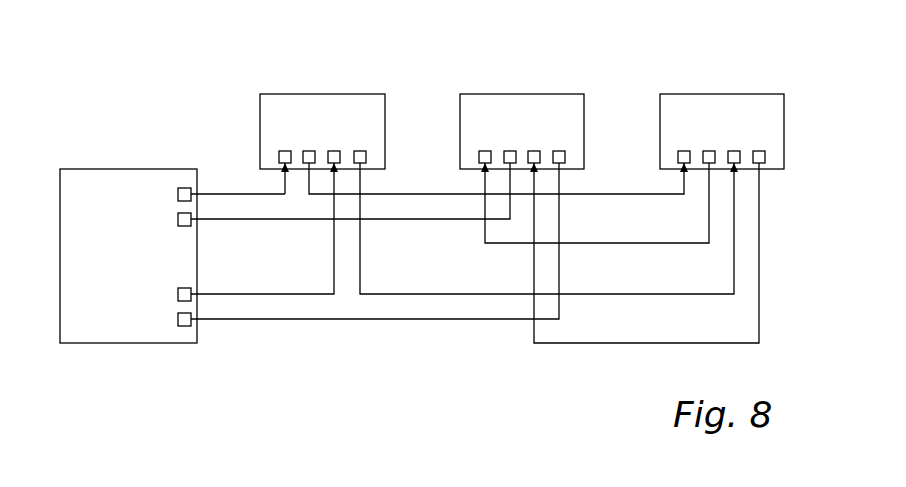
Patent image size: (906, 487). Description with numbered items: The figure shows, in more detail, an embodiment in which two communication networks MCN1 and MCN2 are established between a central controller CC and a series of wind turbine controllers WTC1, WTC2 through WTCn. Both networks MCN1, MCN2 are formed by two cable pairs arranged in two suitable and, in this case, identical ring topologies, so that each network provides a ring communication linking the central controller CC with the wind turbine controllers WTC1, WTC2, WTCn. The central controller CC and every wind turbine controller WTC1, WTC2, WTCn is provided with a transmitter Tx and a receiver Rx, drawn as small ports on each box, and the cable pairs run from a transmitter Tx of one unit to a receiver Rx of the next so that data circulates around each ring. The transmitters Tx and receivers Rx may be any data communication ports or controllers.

The central controller CC is at (70, 344).
The first communication network MCN1 is at (152, 192).
The second communication network MCN2 is at (153, 330).
The wind turbine controller WTC1 is at (318, 93).
The wind turbine controller WTC2 is at (707, 43).
The wind turbine controller WTCn is at (716, 93).
The transmitter Tx is at (181, 188).
The receiver Rx is at (192, 221).